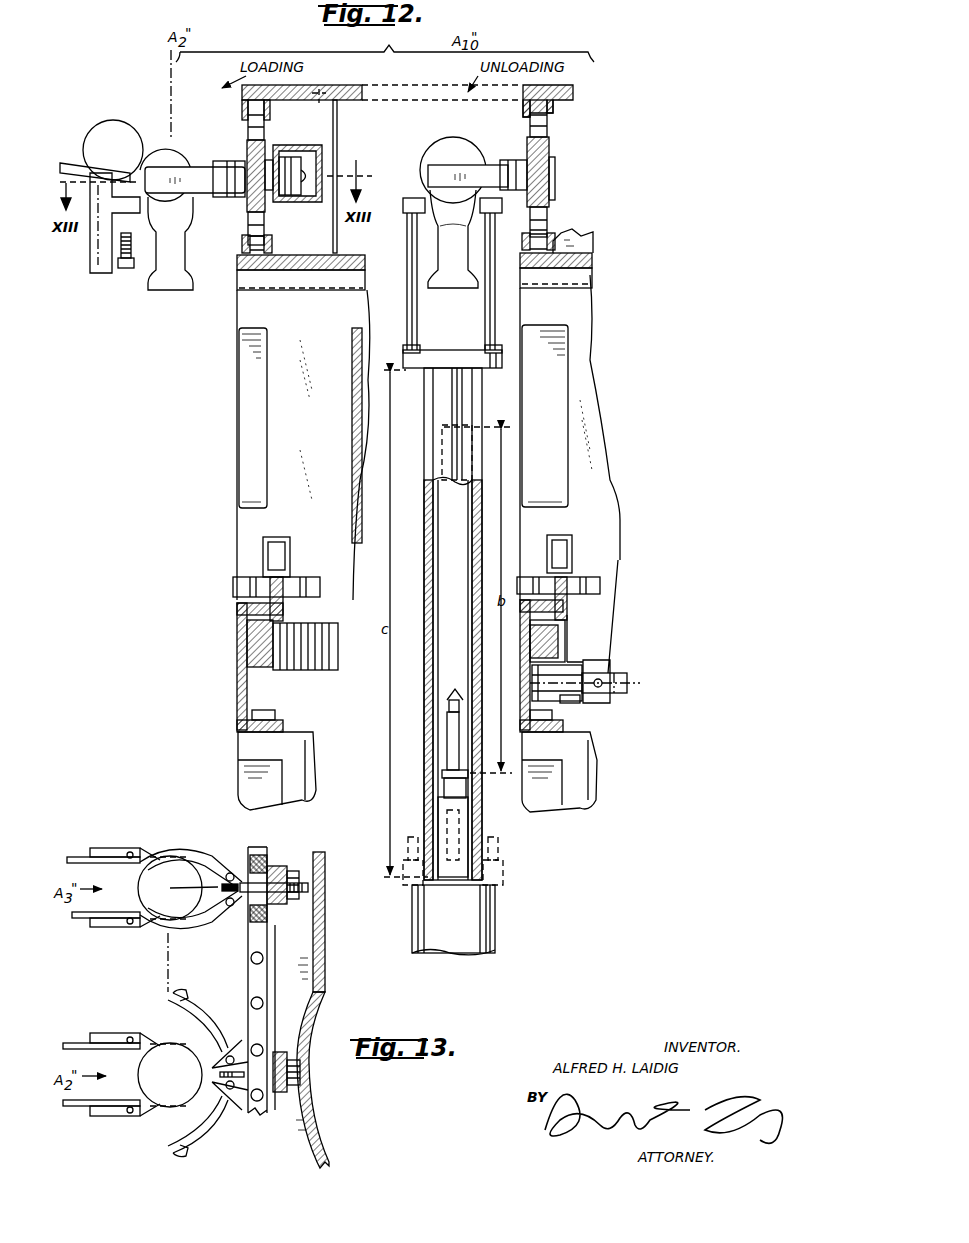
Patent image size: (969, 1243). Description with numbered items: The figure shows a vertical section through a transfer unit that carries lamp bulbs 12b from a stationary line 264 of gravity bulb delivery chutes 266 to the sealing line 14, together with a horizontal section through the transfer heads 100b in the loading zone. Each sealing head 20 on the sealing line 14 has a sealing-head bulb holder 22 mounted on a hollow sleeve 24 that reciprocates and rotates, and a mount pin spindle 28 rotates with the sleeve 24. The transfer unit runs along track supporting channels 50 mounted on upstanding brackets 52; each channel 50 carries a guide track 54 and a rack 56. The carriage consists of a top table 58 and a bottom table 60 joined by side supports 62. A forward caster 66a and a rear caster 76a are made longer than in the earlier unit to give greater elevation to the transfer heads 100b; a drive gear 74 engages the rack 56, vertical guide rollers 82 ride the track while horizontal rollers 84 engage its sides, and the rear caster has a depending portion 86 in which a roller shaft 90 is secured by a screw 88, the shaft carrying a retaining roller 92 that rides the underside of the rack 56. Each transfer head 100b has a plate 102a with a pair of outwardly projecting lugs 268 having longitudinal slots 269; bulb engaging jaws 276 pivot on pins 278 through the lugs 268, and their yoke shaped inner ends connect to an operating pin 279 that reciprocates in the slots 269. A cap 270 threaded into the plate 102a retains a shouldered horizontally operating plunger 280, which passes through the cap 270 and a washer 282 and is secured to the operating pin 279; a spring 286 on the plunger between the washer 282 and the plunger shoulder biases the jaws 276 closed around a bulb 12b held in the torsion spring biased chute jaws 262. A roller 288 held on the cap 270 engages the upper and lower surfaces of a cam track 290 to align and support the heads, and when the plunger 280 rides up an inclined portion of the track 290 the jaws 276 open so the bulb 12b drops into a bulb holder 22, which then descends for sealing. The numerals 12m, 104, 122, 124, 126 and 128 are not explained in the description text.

In FIG. 12, the bulb 12b is at (128, 135).
In FIG. 13, the bulb 12b is at (168, 856).
In FIG. 12, the valve member 12m is at (446, 757).
In FIG. 12, the sealing line 14 is at (498, 934).
In FIG. 12, the sealing head 20 is at (430, 352).
In FIG. 12, the sealing-head bulb holder 22 is at (412, 203).
In FIG. 12, the hollow sleeve 24 is at (430, 712).
In FIG. 12, the mount pin spindle 28 is at (440, 464).
In FIG. 12, the track supporting channel 50 is at (236, 690).
In FIG. 12, the bracket 52 is at (238, 752).
In FIG. 12, the guide track 54 is at (236, 603).
In FIG. 12, the rack 56 is at (246, 644).
In FIG. 12, the top table 58 is at (358, 88).
In FIG. 12, the bottom table 60 is at (240, 268).
In FIG. 12, the side support 62 is at (346, 78).
In FIG. 12, the forward caster 66a is at (244, 441).
In FIG. 12, the drive gear 74 is at (312, 662).
In FIG. 12, the rear caster 76a is at (600, 456).
In FIG. 12, the vertical guide roller 82 is at (278, 545).
In FIG. 12, the horizontal roller 84 is at (285, 580).
In FIG. 12, the depending portion 86 is at (606, 640).
In FIG. 12, the screw 88 is at (628, 683).
In FIG. 12, the roller shaft 90 is at (572, 702).
In FIG. 12, the retaining roller 92 is at (560, 683).
In FIG. 12, the transfer head 100b is at (220, 158).
In FIG. 13, the transfer head 100b is at (194, 990).
In FIG. 12, the plate 102a is at (263, 147).
In FIG. 13, the plate 102a is at (276, 866).
In FIG. 12, the nut 104 is at (270, 228).
In FIG. 12, the upper bearing 122 is at (549, 118).
In FIG. 12, the housing 124 is at (523, 102).
In FIG. 12, the lower bearing 126 is at (262, 256).
In FIG. 12, the collar 128 is at (275, 248).
In FIG. 12, the chute jaws 262 is at (163, 200).
In FIG. 13, the chute jaws 262 is at (132, 896).
In FIG. 12, the stationary line of bulb delivery chutes 264 is at (165, 78).
In FIG. 13, the stationary line of bulb delivery chutes 264 is at (165, 961).
In FIG. 12, the bulb delivery chute 266 is at (80, 138).
In FIG. 13, the bulb delivery chute 266 is at (80, 855).
In FIG. 12, the lug 268 is at (222, 195).
In FIG. 13, the lug 268 is at (254, 848).
In FIG. 13, the longitudinal slot 269 is at (214, 1058).
In FIG. 12, the cap 270 is at (270, 196).
In FIG. 13, the cap 270 is at (285, 876).
In FIG. 12, the bulb engaging jaw 276 is at (176, 168).
In FIG. 13, the bulb engaging jaw 276 is at (192, 848).
In FIG. 12, the pin 278 is at (240, 198).
In FIG. 13, the pin 278 is at (228, 872).
In FIG. 13, the operating pin 279 is at (234, 897).
In FIG. 12, the shouldered horizontally operating plunger 280 is at (322, 150).
In FIG. 13, the shouldered horizontally operating plunger 280 is at (310, 884).
In FIG. 13, the washer 282 is at (250, 912).
In FIG. 13, the spring 286 is at (270, 912).
In FIG. 12, the roller 288 is at (324, 170).
In FIG. 13, the roller 288 is at (300, 896).
In FIG. 12, the cam track 290 is at (338, 122).
In FIG. 13, the cam track 290 is at (326, 980).